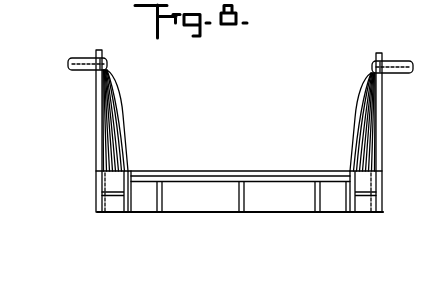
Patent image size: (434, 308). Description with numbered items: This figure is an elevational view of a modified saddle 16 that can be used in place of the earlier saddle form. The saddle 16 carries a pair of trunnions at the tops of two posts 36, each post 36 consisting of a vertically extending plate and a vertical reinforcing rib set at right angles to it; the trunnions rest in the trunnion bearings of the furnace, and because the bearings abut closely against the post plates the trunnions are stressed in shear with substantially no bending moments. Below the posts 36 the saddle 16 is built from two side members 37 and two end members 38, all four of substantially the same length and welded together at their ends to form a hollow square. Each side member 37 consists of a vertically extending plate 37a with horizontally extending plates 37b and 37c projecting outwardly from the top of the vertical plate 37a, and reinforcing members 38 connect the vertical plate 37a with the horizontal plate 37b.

The saddle 16 is at (327, 58).
The post 36 is at (354, 132).
The side member 37 is at (240, 226).
The vertically extending plate 37a is at (207, 204).
The horizontally extending plate 37b is at (182, 178).
The horizontally extending plate 37c is at (167, 183).
The end member 38 is at (244, 200).